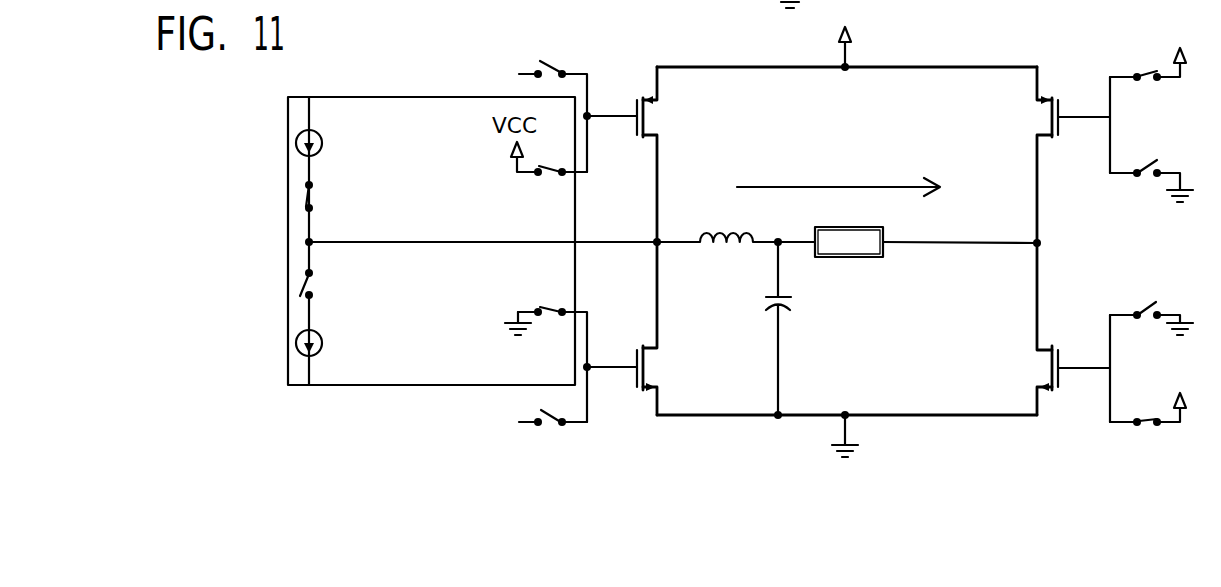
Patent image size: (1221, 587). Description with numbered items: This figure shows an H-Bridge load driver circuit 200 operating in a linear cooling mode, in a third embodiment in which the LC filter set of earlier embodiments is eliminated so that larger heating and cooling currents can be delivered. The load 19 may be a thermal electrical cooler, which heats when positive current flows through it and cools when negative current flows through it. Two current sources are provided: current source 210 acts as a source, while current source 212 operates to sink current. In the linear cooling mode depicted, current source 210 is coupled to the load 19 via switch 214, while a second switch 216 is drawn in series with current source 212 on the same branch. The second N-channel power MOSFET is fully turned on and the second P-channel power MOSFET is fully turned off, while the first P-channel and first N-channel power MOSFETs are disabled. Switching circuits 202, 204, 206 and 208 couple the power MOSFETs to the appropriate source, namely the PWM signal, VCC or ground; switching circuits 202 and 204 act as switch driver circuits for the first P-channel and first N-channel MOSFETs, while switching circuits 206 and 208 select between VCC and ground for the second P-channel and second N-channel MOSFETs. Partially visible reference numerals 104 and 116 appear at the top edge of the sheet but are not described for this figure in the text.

The load 19 is at (857, 260).
The sense circuit (partial) 104 is at (481, 1).
The controller (partial) 116 is at (1080, 1).
The H-Bridge load driver circuit 200 is at (687, 40).
The switching circuit 202 is at (553, 57).
The switching circuit 204 is at (550, 428).
The switching circuit 206 is at (1148, 72).
The switching circuit 208 is at (1145, 428).
The current source 210 is at (322, 128).
The current source 212 is at (322, 328).
The switch 214 is at (313, 195).
The switch 216 is at (340, 276).